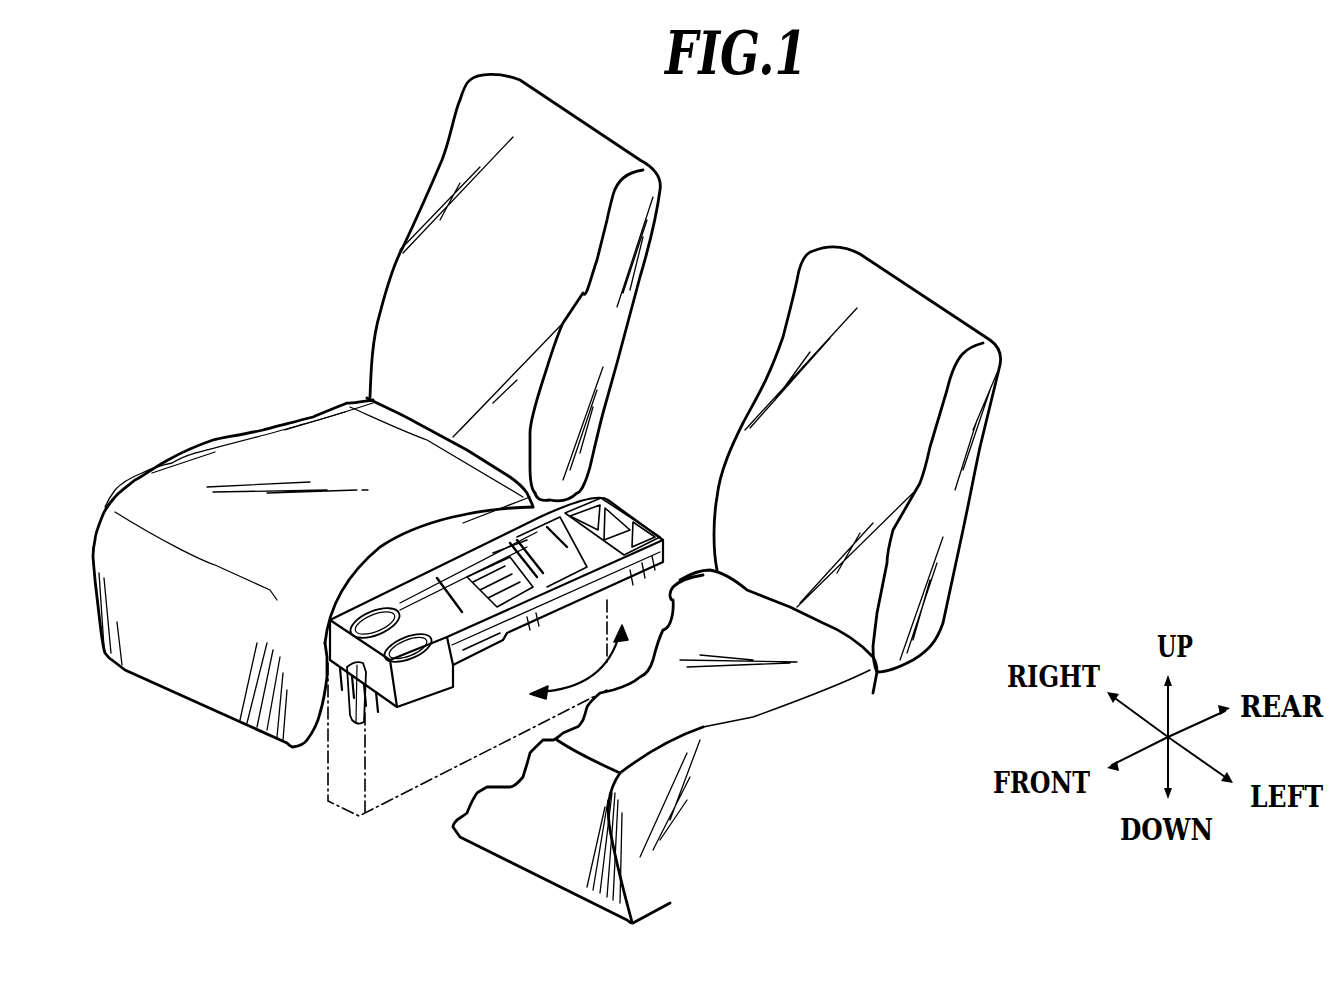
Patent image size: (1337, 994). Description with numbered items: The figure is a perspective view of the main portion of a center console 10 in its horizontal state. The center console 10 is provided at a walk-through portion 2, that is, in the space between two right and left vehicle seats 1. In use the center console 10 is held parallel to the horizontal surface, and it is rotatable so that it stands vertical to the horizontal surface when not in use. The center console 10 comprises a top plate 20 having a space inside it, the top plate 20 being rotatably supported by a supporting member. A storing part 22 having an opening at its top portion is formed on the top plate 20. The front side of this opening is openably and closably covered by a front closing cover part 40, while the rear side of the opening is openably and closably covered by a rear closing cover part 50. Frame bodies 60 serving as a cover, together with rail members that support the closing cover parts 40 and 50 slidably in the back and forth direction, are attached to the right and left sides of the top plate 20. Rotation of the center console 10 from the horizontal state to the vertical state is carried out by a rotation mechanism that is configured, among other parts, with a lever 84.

The vehicle seat 1 is at (578, 138).
The walk-through portion 2 is at (435, 805).
The center console 10 is at (626, 527).
The top plate 20 is at (338, 640).
The storing part 22 is at (500, 590).
The front closing cover part 40 is at (467, 622).
The rear closing cover part 50 is at (577, 567).
The frame body 60 is at (348, 616).
The lever 84 is at (345, 725).